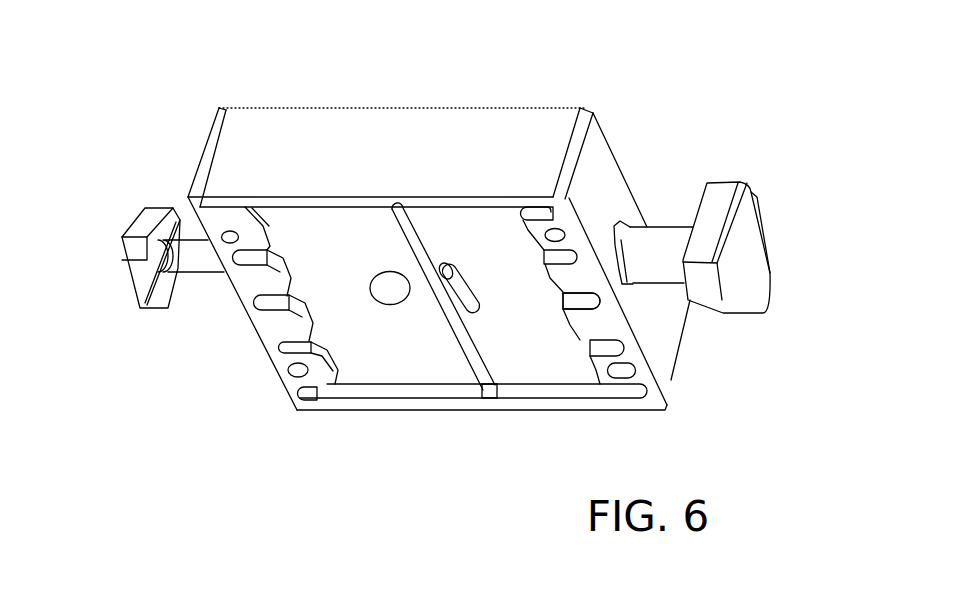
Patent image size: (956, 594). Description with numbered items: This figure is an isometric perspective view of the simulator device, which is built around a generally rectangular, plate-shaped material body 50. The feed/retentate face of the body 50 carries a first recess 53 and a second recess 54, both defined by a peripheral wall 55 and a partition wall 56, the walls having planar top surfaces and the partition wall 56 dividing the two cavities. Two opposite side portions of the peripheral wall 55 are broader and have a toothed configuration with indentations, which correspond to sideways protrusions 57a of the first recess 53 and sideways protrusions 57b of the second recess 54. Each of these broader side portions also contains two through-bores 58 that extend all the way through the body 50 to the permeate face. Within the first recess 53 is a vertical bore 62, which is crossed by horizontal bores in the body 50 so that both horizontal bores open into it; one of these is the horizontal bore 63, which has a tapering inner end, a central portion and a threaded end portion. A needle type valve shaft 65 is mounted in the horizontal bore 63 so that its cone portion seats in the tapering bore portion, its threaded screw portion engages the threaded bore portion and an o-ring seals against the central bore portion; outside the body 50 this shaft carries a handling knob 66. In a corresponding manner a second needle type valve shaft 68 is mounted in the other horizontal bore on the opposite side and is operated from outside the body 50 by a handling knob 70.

The material body 50 is at (352, 130).
The first recess 53 is at (327, 230).
The second recess 54 is at (440, 220).
The peripheral wall 55 is at (563, 277).
The partition wall 56 is at (428, 325).
The sideways protrusions of recess 53 57a is at (288, 352).
The sideways protrusions of recess 54 57b is at (590, 300).
The through-bores 58 is at (224, 232).
The vertical bore 62 is at (385, 290).
The horizontal bore 63 is at (453, 278).
The needle type valve shaft 65 is at (667, 224).
The handling knob 66 is at (747, 230).
The needle type valve shaft 68 is at (192, 281).
The handling knob 70 is at (148, 237).